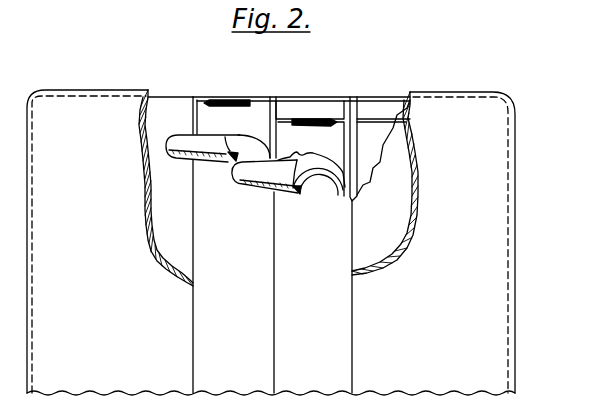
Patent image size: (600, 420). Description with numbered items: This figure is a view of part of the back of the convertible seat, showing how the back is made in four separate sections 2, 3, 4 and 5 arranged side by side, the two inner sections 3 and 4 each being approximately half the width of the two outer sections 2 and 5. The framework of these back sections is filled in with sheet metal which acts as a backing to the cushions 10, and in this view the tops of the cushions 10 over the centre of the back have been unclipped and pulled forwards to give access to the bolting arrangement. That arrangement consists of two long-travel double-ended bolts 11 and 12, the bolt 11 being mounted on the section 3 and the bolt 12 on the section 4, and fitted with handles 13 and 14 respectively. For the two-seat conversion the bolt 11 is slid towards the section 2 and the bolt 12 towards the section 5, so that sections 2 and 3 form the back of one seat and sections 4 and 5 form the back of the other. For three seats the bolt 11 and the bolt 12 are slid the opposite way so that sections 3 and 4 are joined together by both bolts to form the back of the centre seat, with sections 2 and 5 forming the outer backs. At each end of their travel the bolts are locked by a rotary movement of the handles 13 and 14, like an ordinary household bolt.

The cushions 10 is at (108, 107).
The back section 2 is at (168, 105).
The double-ended bolt 11 is at (198, 100).
The handle 13 is at (205, 102).
The back section 3 is at (262, 108).
The back section 4 is at (308, 110).
The double-ended bolt 12 is at (358, 102).
The back section 5 is at (386, 107).
The handle 14 is at (336, 124).